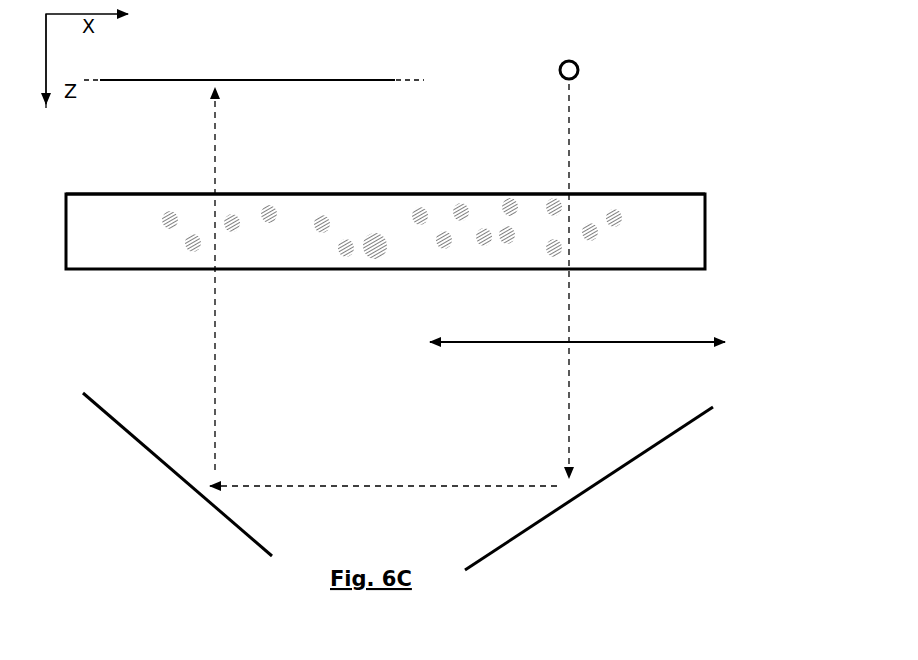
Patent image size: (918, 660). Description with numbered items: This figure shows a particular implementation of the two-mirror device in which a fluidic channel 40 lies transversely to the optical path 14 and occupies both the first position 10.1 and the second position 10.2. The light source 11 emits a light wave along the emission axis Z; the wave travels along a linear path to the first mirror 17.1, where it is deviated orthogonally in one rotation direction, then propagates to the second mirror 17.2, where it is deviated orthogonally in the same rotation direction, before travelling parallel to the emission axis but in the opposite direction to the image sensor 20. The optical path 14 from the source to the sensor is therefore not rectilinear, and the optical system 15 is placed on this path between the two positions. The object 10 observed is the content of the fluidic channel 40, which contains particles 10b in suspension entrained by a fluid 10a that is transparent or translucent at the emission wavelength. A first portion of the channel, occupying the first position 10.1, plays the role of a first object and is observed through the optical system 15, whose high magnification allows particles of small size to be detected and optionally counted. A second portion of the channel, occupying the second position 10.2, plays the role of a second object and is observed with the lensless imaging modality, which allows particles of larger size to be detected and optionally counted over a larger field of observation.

The object 10 is at (411, 194).
The first position 10.1 is at (528, 192).
The second position 10.2 is at (170, 190).
The medium 10a is at (678, 224).
The particles 10b is at (589, 214).
The light source 11 is at (556, 73).
The optical path 14 is at (203, 285).
The optical system 15 is at (468, 351).
The first mirror 17.1 is at (560, 514).
The second mirror 17.2 is at (163, 465).
The image sensor 20 is at (260, 80).
The fluidic channel 40 is at (662, 247).